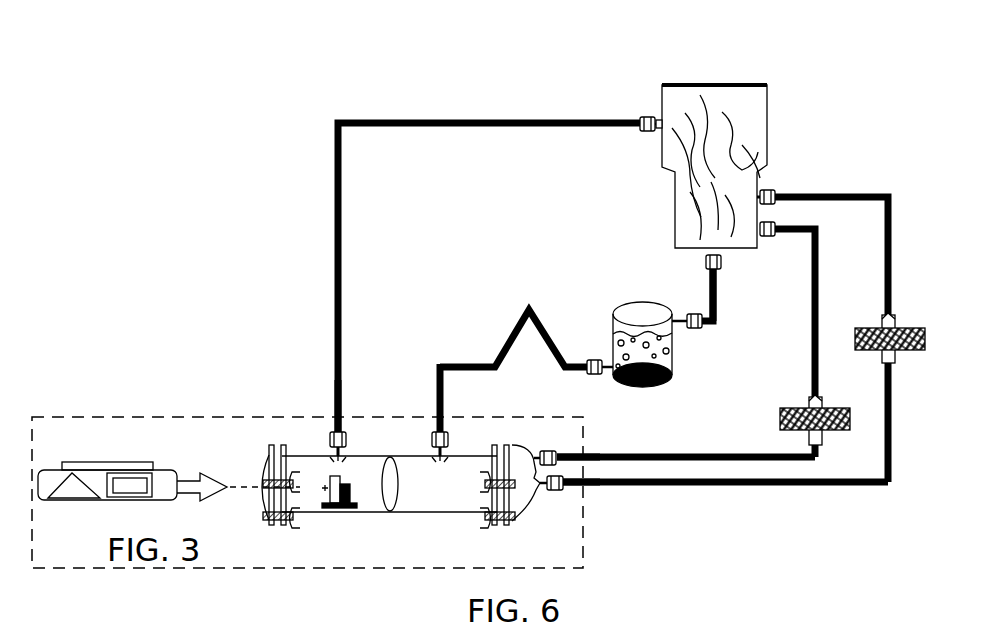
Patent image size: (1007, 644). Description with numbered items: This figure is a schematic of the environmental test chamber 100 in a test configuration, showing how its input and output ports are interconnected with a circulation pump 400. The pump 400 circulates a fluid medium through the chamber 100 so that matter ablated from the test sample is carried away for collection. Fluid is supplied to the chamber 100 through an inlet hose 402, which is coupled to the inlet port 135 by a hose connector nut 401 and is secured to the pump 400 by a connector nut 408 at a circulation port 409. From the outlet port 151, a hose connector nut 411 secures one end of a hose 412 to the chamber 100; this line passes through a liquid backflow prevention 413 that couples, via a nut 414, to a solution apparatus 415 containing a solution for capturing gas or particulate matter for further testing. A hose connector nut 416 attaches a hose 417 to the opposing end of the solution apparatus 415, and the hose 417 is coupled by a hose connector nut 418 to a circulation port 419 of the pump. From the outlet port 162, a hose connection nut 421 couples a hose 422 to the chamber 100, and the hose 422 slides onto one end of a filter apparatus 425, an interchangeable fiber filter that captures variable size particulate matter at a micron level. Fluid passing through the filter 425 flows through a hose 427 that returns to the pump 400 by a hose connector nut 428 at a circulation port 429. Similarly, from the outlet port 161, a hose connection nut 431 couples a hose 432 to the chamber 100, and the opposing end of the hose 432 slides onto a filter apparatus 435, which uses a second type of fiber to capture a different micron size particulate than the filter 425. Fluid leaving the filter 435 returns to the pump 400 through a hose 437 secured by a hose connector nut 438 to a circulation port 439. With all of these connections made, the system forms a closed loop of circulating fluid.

The environmental chamber 100 is at (407, 528).
The inlet port 135 is at (330, 450).
The outlet port 151 is at (433, 450).
The outlet port 161 is at (535, 493).
The outlet port 162 is at (532, 453).
The circulation pump 400 is at (787, 108).
The hose connector nut 401 is at (333, 435).
The inlet hose 402 is at (334, 250).
The connector nut 408 is at (648, 118).
The circulation port 409 is at (660, 120).
The hose connector nut 411 is at (433, 435).
The hose 412 is at (437, 415).
The liquid backflow prevention 413 is at (587, 362).
The nut 414 is at (527, 312).
The solution apparatus 415 is at (613, 327).
The hose connector nut 416 is at (687, 315).
The hose 417 is at (712, 303).
The hose connector nut 418 is at (717, 267).
The circulation port 419 is at (720, 268).
The hose connection nut 421 is at (558, 450).
The hose 422 is at (682, 453).
The filter apparatus 425 is at (856, 389).
The hose 427 is at (818, 313).
The hose connector nut 428 is at (777, 222).
The circulation port 429 is at (757, 232).
The hose connection nut 431 is at (562, 490).
The hose 432 is at (673, 486).
The filter apparatus 435 is at (905, 352).
The hose 437 is at (820, 194).
The hose connector nut 438 is at (773, 190).
The circulation port 439 is at (765, 190).